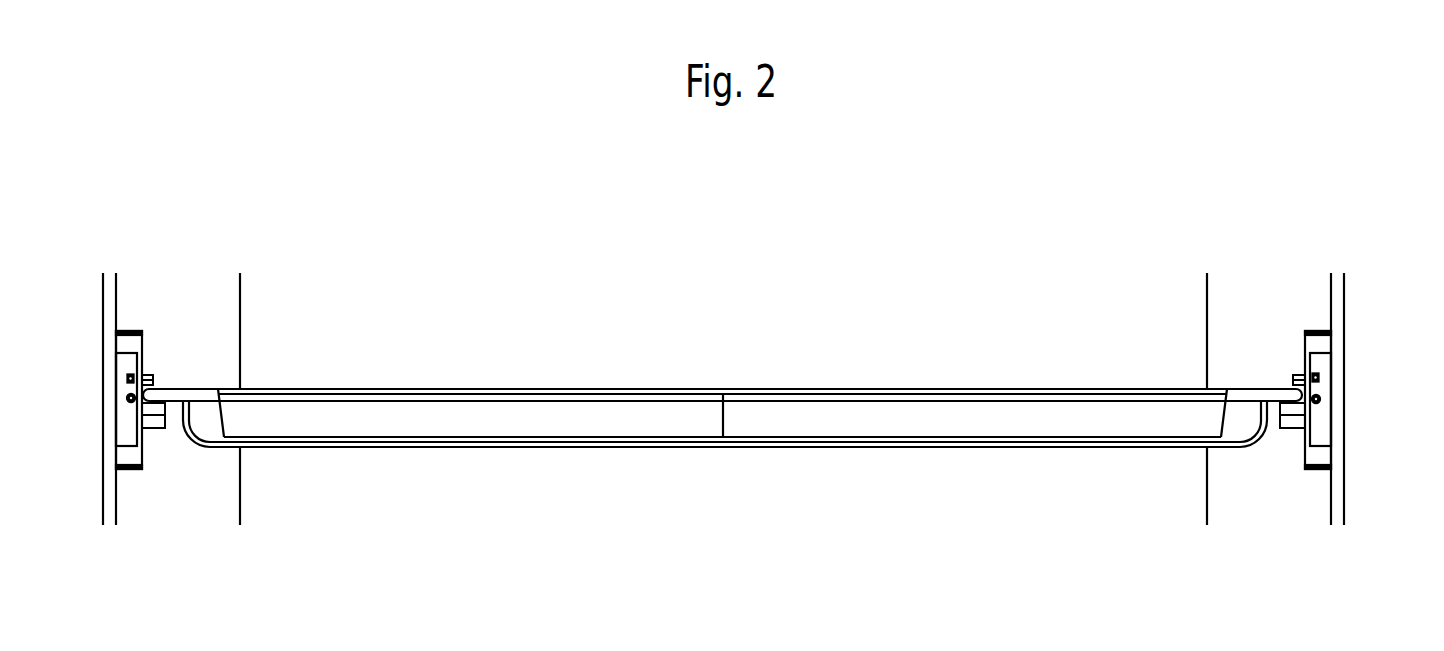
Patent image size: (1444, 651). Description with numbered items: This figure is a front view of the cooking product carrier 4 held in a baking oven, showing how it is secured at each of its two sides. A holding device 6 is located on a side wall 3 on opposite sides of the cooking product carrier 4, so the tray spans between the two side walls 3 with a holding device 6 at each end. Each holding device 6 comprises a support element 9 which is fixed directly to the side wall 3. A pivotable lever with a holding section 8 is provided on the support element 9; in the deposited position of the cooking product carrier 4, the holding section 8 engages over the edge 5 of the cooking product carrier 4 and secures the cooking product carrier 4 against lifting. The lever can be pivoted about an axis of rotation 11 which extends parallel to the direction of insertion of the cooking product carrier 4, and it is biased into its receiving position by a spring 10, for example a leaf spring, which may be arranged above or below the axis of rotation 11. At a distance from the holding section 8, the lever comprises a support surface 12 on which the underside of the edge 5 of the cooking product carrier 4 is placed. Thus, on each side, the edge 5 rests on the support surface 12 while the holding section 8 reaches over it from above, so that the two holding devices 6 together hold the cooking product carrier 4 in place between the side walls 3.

The side wall 3 is at (110, 495).
The cooking product carrier 4 is at (769, 420).
The edge 5 is at (154, 390).
The holding device 6 is at (173, 243).
The holding section 8 is at (153, 378).
The support element 9 is at (129, 347).
The spring 10 is at (127, 378).
The axis of rotation 11 is at (128, 402).
The support surface 12 is at (153, 407).